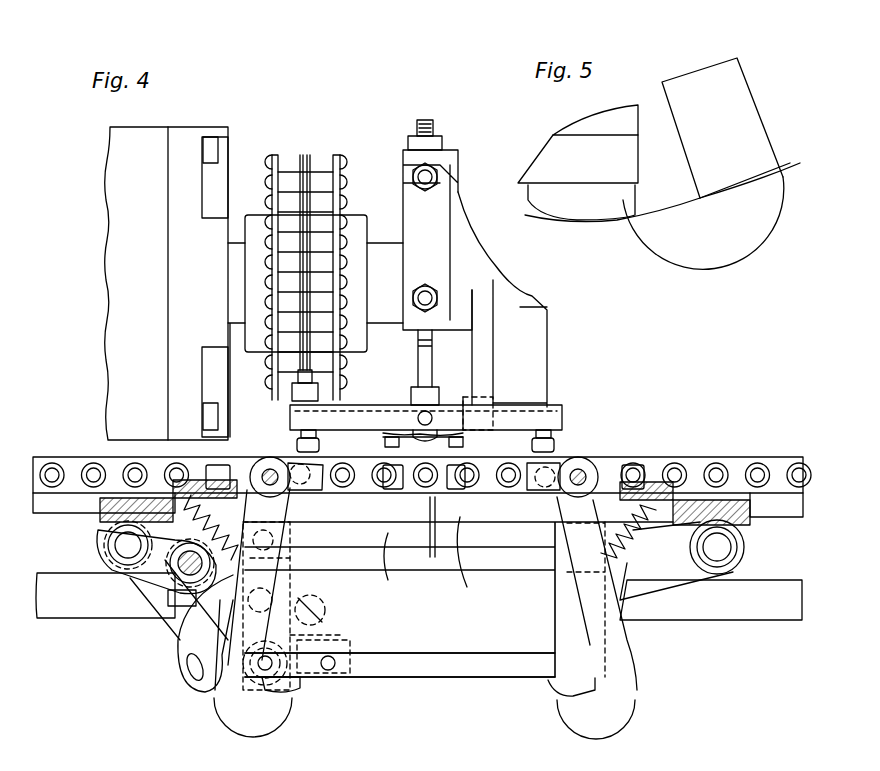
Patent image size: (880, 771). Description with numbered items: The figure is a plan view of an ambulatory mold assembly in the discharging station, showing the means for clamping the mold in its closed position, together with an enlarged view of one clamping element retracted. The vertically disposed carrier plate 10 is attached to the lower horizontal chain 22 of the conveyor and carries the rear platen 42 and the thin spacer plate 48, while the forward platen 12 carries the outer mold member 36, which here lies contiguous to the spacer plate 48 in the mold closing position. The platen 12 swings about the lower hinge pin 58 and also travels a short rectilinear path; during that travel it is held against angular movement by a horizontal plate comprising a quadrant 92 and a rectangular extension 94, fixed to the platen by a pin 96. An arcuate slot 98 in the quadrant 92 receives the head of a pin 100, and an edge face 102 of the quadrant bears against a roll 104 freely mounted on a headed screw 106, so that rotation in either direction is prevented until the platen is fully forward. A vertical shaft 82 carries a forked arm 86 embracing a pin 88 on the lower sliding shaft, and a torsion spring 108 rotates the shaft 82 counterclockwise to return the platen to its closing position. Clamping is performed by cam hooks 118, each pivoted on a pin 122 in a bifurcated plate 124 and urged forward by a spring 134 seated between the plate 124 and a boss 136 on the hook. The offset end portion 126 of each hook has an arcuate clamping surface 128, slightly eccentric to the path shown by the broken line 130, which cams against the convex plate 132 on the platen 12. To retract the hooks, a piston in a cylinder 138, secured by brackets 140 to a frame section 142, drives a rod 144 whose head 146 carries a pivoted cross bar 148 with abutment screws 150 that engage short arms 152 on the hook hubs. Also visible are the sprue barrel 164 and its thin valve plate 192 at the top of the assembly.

In FIG. 4, the carrier plate 10 is at (459, 566).
In FIG. 4, the platen 12 is at (442, 673).
In FIG. 5, the platen 12 is at (540, 160).
In FIG. 4, the chain 22 is at (732, 465).
In FIG. 4, the outer mold member 36 is at (505, 672).
In FIG. 5, the outer mold member 36 is at (588, 128).
In FIG. 4, the rear platen 42 is at (400, 565).
In FIG. 4, the spacer plate 48 is at (515, 585).
In FIG. 4, the lower hinge pin 58 is at (263, 672).
In FIG. 4, the vertical shaft 82 is at (177, 565).
In FIG. 4, the arm 86 is at (290, 558).
In FIG. 4, the pin 88 is at (275, 535).
In FIG. 4, the quadrant 92 is at (185, 690).
In FIG. 4, the rectangular extension 94 is at (348, 680).
In FIG. 4, the pin 96 is at (335, 663).
In FIG. 4, the arcuate slot 98 is at (188, 668).
In FIG. 4, the pin 100 is at (275, 595).
In FIG. 4, the edge face 102 is at (342, 640).
In FIG. 4, the roll 104 is at (320, 620).
In FIG. 4, the headed screw 106 is at (325, 608).
In FIG. 4, the torsion spring 108 is at (150, 570).
In FIG. 4, the clamping hook 118 is at (222, 690).
In FIG. 5, the clamping hook 118 is at (712, 80).
In FIG. 4, the pin 122 is at (268, 475).
In FIG. 4, the plate 124 is at (210, 500).
In FIG. 4, the offset end portion 126 is at (285, 715).
In FIG. 5, the offset end portion 126 is at (665, 263).
In FIG. 5, the clamping surface 128 is at (665, 205).
In FIG. 5, the broken line 130 is at (732, 200).
In FIG. 4, the plate 132 is at (290, 690).
In FIG. 5, the plate 132 is at (585, 215).
In FIG. 4, the spring 134 is at (225, 500).
In FIG. 4, the boss 136 is at (640, 592).
In FIG. 4, the cylinder 138 is at (410, 210).
In FIG. 4, the brackets 140 is at (407, 152).
In FIG. 4, the frame section 142 is at (487, 353).
In FIG. 4, the rod 144 is at (424, 348).
In FIG. 4, the head 146 is at (410, 397).
In FIG. 4, the cross bar 148 is at (378, 418).
In FIG. 4, the abutment screws 150 is at (298, 444).
In FIG. 4, the short arms 152 is at (318, 510).
In FIG. 4, the sprue barrel 164 is at (435, 500).
In FIG. 4, the valve plate 192 is at (480, 478).